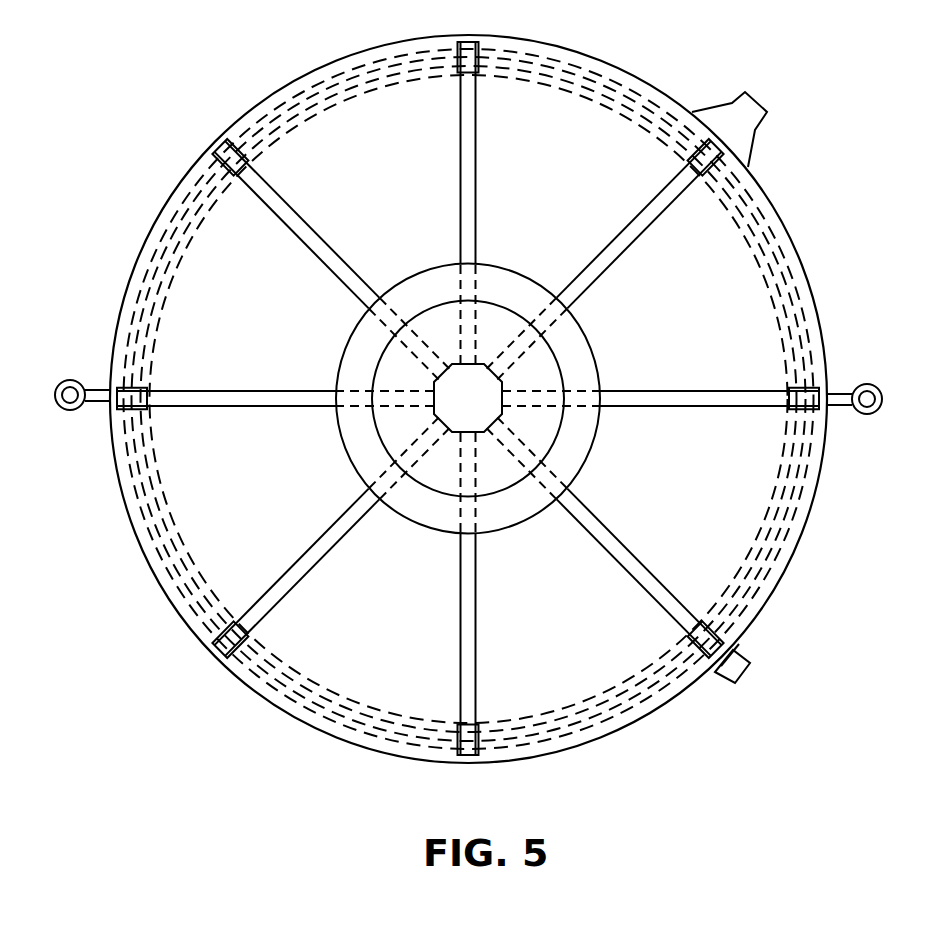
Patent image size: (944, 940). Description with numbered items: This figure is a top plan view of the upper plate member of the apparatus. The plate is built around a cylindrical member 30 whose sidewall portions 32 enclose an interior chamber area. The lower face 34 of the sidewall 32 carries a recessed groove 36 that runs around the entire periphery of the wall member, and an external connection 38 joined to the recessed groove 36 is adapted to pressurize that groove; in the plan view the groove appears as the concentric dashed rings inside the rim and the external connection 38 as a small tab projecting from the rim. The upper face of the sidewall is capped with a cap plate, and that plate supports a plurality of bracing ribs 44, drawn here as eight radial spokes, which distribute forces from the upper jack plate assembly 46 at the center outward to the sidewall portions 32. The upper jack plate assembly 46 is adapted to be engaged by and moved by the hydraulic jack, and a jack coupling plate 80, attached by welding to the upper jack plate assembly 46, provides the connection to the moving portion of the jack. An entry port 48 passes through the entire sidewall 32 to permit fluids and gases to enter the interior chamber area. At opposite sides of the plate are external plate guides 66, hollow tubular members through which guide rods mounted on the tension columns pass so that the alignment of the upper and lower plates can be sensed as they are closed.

The cylindrical member 30 is at (469, 398).
The sidewall portions 32 is at (506, 42).
The lower face 34 is at (469, 382).
The recessed groove 36 is at (469, 399).
The external connection 38 is at (745, 650).
The bracing ribs 44 is at (477, 166).
The upper jack plate assembly 46 is at (581, 321).
The entry port 48 is at (760, 102).
The plate guides 66 is at (62, 382).
The jack coupling plate 80 is at (497, 313).